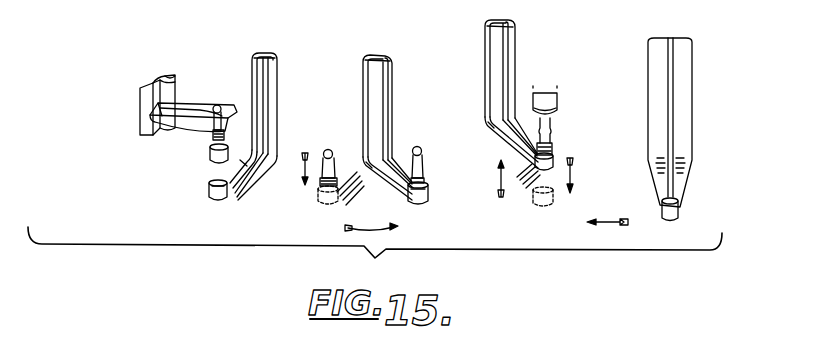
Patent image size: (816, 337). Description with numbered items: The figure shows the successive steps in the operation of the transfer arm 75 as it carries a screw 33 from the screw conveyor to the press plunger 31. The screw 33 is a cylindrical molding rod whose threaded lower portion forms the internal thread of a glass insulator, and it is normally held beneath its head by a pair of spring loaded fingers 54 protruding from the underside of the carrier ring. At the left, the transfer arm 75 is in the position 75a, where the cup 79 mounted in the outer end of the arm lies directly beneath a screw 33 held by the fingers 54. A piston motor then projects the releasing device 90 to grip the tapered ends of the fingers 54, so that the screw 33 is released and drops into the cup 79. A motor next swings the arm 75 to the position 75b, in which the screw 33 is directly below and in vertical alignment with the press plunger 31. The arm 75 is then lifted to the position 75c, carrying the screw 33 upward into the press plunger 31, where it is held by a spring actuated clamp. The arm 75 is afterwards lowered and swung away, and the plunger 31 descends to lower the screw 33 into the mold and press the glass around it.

The releasing device 90 is at (153, 80).
The spring loaded fingers 54 is at (195, 103).
The screw 33 is at (211, 141).
The cup 79 is at (210, 184).
The transfer arm 75 is at (270, 135).
The transfer arm position 75a is at (257, 186).
The transfer arm position 75b is at (432, 200).
The transfer arm position 75c is at (504, 143).
The press plunger 31 is at (550, 100).